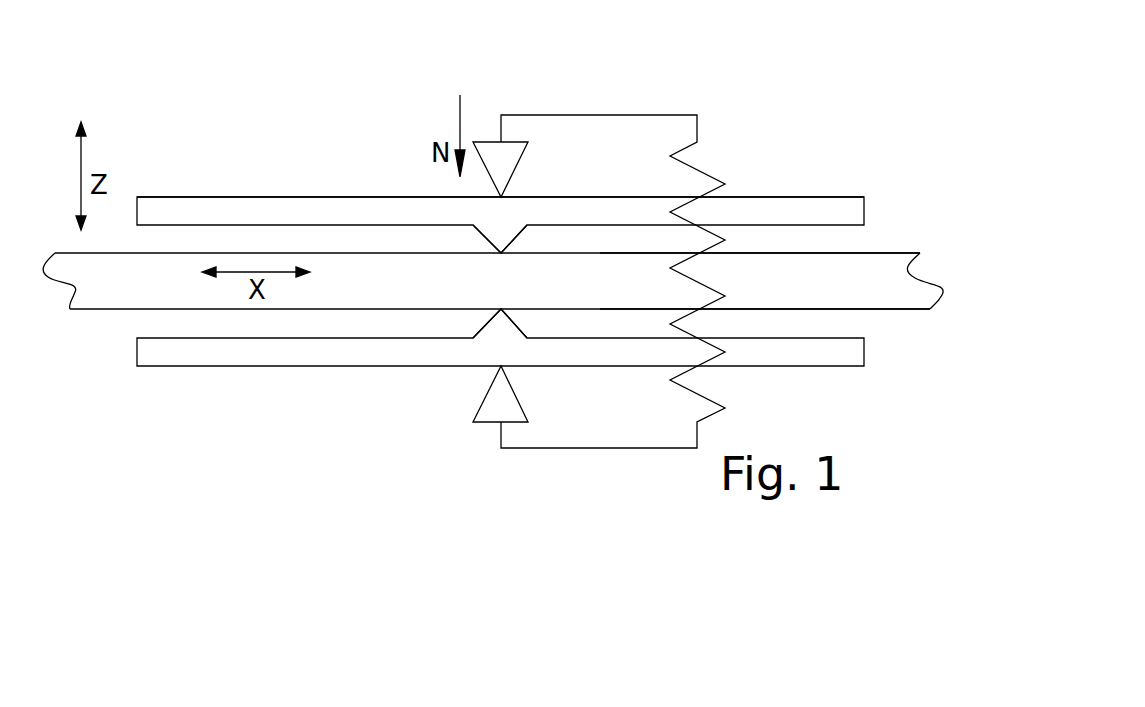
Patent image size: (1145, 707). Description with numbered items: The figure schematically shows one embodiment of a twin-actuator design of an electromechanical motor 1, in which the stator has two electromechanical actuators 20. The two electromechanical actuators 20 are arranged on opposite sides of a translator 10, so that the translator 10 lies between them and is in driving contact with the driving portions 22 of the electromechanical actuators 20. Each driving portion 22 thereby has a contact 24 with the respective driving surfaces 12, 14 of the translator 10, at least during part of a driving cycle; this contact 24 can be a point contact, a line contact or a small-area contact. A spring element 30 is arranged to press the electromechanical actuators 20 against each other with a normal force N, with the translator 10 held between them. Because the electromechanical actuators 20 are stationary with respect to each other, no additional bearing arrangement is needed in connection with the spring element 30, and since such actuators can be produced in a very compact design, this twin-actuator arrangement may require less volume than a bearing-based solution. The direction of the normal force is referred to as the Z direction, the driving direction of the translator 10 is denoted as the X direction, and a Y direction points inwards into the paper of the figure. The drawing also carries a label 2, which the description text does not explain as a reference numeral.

The electromechanical motor 1 is at (767, 112).
The bonding plane 2 is at (387, 207).
The translator 10 is at (90, 298).
The driving surface 12 is at (872, 250).
The driving surface 14 is at (897, 310).
The electromechanical actuator 20 is at (287, 207).
The driving portion 22 is at (503, 237).
The contact 24 is at (501, 253).
The spring element 30 is at (598, 448).